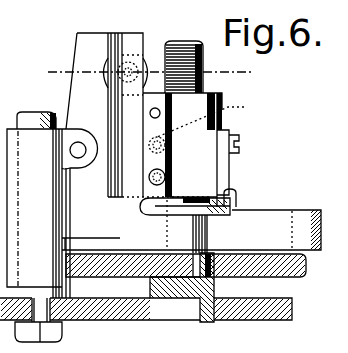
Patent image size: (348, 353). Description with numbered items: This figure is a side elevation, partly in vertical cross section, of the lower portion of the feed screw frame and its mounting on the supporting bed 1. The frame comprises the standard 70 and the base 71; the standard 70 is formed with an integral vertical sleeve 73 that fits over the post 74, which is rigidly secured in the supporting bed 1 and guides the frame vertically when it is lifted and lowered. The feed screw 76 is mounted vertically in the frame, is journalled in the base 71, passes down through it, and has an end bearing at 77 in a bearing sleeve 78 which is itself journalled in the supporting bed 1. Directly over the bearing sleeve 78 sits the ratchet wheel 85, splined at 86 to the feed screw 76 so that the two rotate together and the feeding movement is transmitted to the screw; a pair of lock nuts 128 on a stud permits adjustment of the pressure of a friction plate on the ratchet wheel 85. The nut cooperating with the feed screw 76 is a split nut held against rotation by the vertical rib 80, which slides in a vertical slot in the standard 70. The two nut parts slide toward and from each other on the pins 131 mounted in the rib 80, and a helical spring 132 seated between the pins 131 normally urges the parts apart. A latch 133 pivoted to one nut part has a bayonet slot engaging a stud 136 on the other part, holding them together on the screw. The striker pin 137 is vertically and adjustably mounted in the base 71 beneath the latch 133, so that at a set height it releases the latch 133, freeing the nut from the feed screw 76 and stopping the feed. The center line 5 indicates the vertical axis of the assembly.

The supporting bed 1 is at (146, 322).
The center line 5 is at (152, 72).
The standard 70 is at (133, 38).
The base 71 is at (267, 220).
The vertical sleeve 73 is at (35, 226).
The post 74 is at (31, 121).
The feed screw 76 is at (181, 48).
The end bearing 77 is at (184, 313).
The bearing sleeve 78 is at (121, 316).
The vertical rib 80 is at (110, 85).
The ratchet wheel 85 is at (307, 266).
The spline 86 is at (211, 265).
The lock nuts 128 is at (150, 97).
The pins 131 is at (160, 112).
The helical spring 132 is at (213, 124).
The latch 133 is at (224, 158).
The stud 136 is at (238, 136).
The striker pin 137 is at (233, 192).